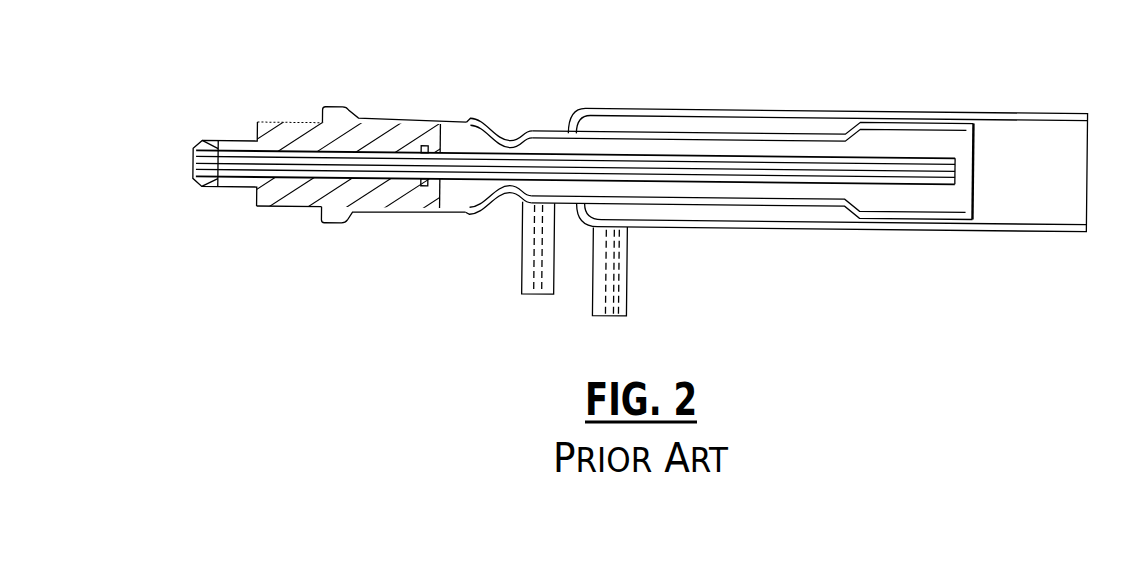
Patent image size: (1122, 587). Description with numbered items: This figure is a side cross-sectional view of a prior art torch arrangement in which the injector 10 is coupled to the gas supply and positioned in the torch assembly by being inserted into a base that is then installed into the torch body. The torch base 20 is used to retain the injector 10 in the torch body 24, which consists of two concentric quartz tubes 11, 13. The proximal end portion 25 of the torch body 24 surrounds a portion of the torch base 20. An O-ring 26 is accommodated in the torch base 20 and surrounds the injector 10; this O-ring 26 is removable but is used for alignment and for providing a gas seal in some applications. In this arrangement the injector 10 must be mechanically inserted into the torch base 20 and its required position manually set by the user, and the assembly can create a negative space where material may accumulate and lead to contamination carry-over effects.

The injector 10 is at (464, 150).
The quartz tube 11 is at (760, 207).
The quartz tube 13 is at (842, 231).
The torch base 20 is at (312, 123).
The torch body 24 is at (472, 222).
The proximal end portion 25 is at (345, 224).
The O-ring 26 is at (424, 200).